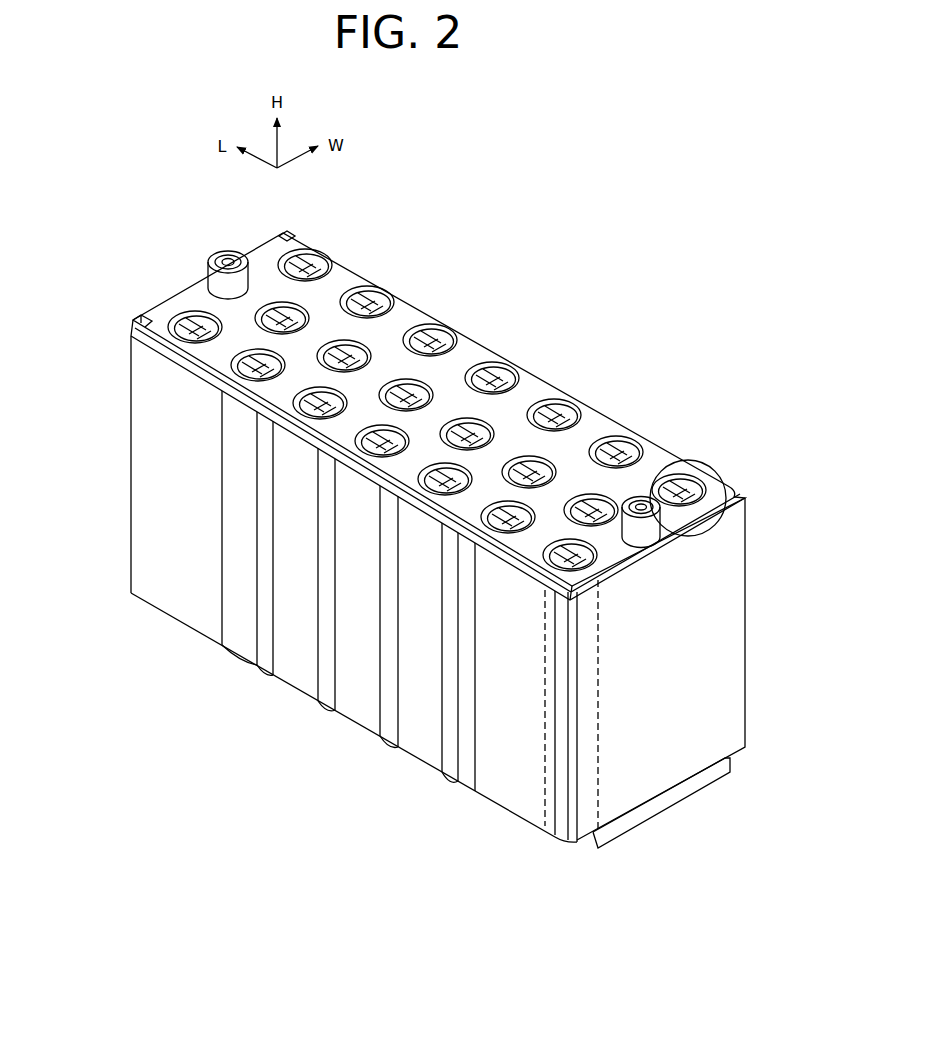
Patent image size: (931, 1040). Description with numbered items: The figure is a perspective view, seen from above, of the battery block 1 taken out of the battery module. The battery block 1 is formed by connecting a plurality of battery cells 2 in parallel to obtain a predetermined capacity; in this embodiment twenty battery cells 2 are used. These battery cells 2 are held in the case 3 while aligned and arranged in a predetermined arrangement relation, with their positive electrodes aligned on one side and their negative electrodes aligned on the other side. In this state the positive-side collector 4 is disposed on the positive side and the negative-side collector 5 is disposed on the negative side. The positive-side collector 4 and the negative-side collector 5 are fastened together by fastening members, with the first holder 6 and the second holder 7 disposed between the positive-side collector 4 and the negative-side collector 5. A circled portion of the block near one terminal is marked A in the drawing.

The battery block 1 is at (471, 281).
The battery cells 2 is at (543, 808).
The case 3 is at (508, 777).
The positive-side collector 4 is at (554, 372).
The negative-side collector 5 is at (373, 742).
The first holder 6 is at (715, 627).
The second holder 7 is at (130, 508).
The enlarged region A is at (709, 461).